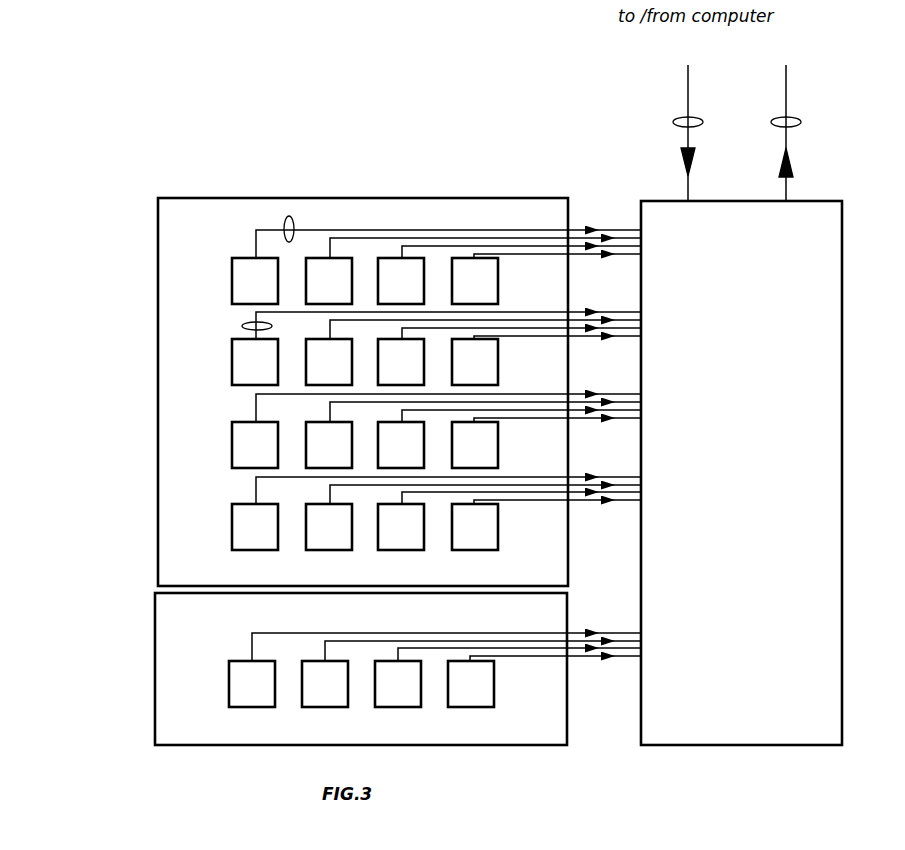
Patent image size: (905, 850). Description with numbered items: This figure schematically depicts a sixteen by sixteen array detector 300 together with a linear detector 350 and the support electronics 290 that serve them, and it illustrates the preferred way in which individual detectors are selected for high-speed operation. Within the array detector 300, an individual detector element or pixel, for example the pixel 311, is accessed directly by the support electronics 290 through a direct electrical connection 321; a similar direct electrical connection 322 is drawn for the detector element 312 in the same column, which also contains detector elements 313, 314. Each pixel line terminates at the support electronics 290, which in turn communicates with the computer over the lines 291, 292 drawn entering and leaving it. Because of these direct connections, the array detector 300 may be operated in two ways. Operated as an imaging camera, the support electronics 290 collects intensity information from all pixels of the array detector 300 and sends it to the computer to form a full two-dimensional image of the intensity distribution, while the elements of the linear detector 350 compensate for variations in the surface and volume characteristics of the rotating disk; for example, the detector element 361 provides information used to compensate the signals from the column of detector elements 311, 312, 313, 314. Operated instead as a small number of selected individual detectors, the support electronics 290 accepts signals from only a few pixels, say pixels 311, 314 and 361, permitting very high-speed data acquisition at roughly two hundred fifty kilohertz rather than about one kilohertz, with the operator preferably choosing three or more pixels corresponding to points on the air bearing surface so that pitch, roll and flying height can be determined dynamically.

The support electronics 290 is at (741, 473).
The input signal line from computer 291 is at (672, 122).
The output signal line to computer 292 is at (802, 122).
The array detector 300 is at (484, 198).
The pixel 311 is at (231, 278).
The detector element 312 is at (232, 366).
The detector element 313 is at (232, 440).
The detector element 314 is at (232, 523).
The direct electrical connection 321 is at (291, 215).
The second row signal wire 322 is at (242, 326).
The linear detector 350 is at (155, 628).
The detector element 361 is at (229, 692).